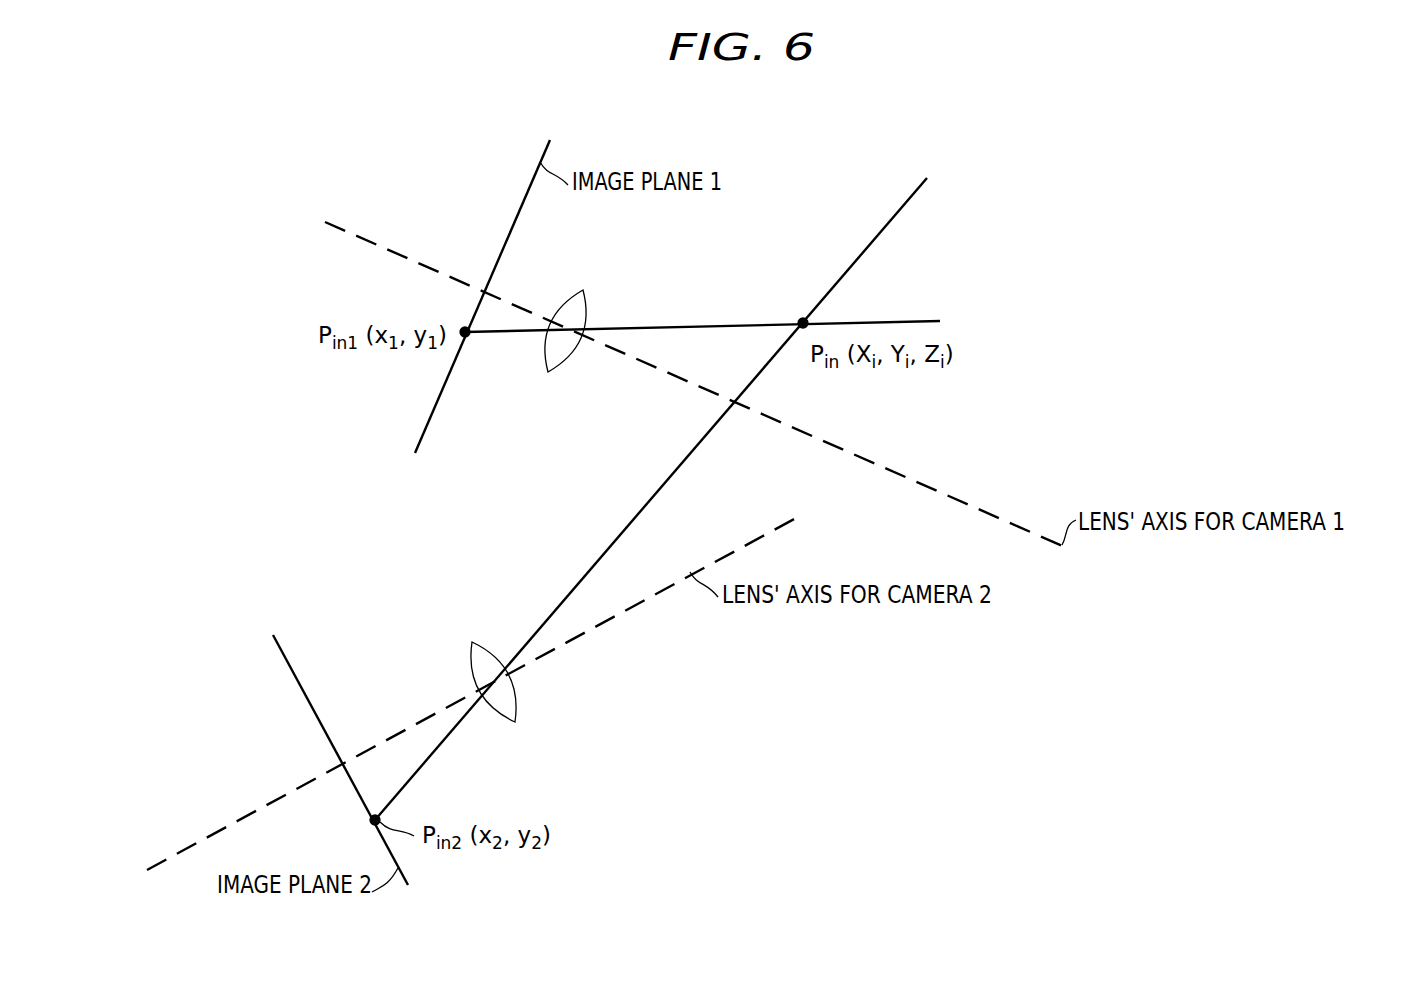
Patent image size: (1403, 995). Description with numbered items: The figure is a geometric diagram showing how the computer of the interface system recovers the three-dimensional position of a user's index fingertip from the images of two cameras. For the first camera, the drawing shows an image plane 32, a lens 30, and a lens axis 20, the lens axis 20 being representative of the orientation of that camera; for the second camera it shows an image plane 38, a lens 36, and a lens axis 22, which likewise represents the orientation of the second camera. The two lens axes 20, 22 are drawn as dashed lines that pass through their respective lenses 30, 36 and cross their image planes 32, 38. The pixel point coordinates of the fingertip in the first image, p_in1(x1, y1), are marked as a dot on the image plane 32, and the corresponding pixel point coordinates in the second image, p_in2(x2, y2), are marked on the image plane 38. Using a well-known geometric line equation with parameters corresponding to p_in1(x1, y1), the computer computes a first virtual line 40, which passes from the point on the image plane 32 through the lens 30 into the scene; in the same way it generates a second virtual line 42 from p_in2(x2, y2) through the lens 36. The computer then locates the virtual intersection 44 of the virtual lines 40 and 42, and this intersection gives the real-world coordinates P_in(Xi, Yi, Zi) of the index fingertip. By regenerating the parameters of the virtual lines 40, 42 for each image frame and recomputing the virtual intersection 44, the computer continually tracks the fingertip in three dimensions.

The lens axis 20 is at (920, 486).
The lens axis 22 is at (598, 628).
The lens 30 is at (586, 305).
The image plane 32 is at (430, 432).
The lens 36 is at (480, 647).
The image plane 38 is at (295, 666).
The first virtual line 40 is at (920, 318).
The second virtual line 42 is at (872, 241).
The virtual intersection 44 is at (800, 318).